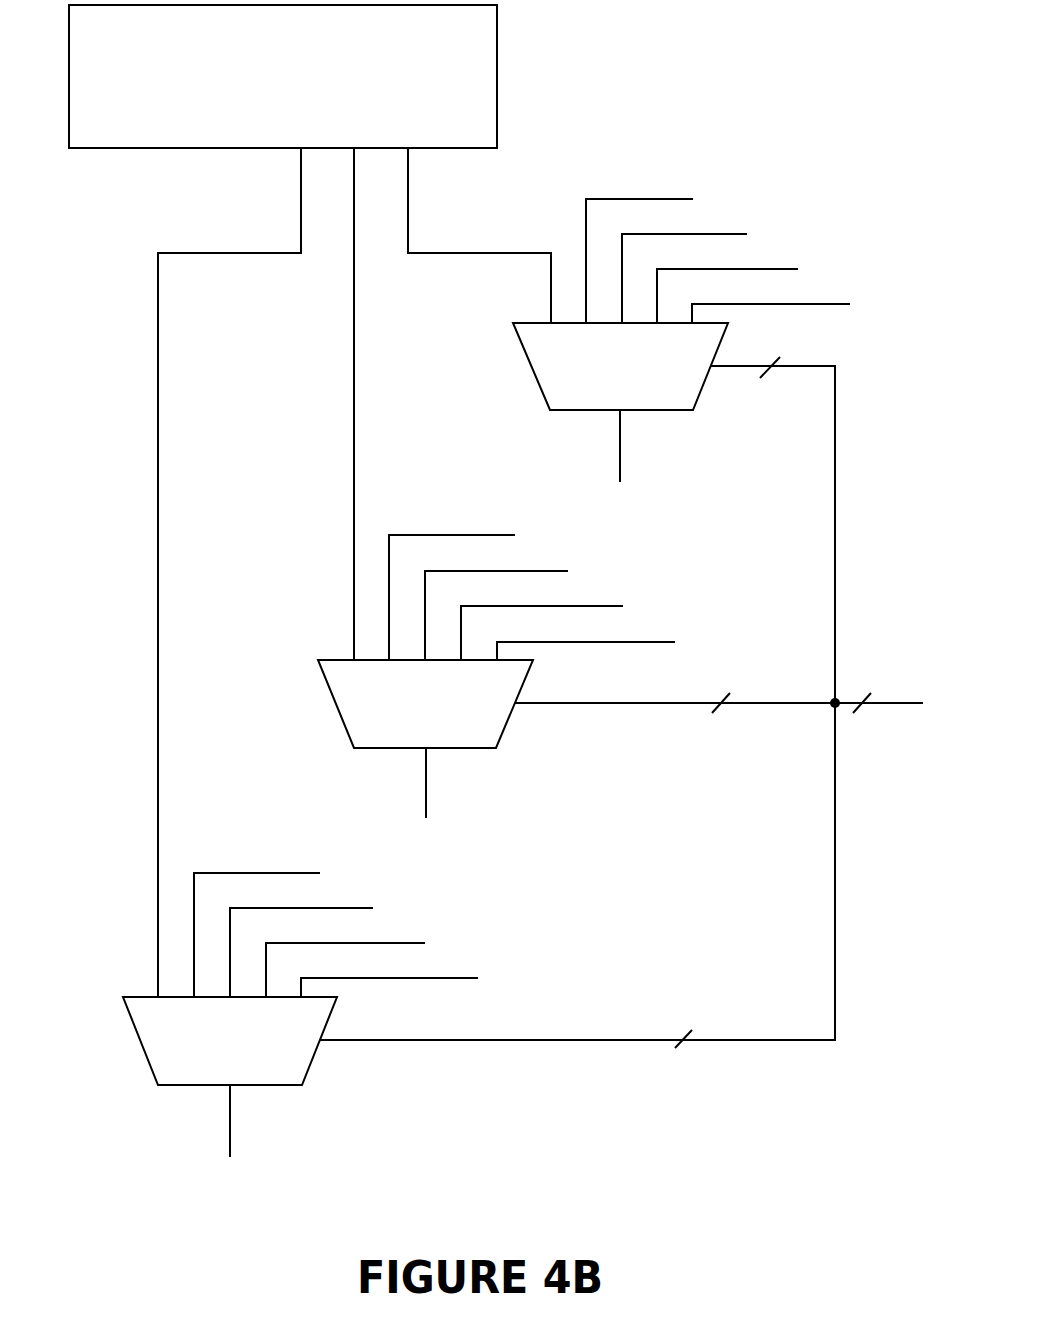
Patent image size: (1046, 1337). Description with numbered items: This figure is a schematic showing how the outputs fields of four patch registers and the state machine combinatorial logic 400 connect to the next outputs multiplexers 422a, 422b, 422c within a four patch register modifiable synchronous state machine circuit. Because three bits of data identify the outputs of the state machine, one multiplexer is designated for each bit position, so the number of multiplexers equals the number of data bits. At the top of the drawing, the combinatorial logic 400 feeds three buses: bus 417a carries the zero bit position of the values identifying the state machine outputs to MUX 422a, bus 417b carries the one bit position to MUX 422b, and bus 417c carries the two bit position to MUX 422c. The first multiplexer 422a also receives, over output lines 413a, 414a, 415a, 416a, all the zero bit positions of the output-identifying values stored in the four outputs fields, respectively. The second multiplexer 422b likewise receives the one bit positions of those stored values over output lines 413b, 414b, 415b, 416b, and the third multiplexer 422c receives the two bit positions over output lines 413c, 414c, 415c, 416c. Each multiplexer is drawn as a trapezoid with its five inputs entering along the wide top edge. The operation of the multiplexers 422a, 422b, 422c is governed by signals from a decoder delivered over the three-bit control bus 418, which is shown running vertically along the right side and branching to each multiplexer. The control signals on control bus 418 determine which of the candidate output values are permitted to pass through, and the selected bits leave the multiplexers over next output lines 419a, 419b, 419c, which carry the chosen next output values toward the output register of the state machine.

The combinatorial logic 400 is at (302, 124).
The output line 413a is at (675, 199).
The output line 414a is at (727, 234).
The output line 415a is at (782, 269).
The output line 416a is at (835, 304).
The output line 413b is at (497, 535).
The output line 414b is at (540, 571).
The output line 415b is at (603, 606).
The output line 416b is at (657, 642).
The output line 413c is at (300, 873).
The output line 414c is at (355, 908).
The output line 415c is at (408, 943).
The output line 416c is at (462, 978).
The bus 417a is at (498, 253).
The bus 417b is at (354, 377).
The bus 417c is at (158, 393).
The control bus 418 is at (878, 702).
The next output line 419a is at (620, 447).
The next output line 419b is at (426, 783).
The next output line 419c is at (230, 1122).
The next outputs multiplexer 422a is at (647, 380).
The next outputs multiplexer 422b is at (450, 718).
The next outputs multiplexer 422c is at (255, 1055).